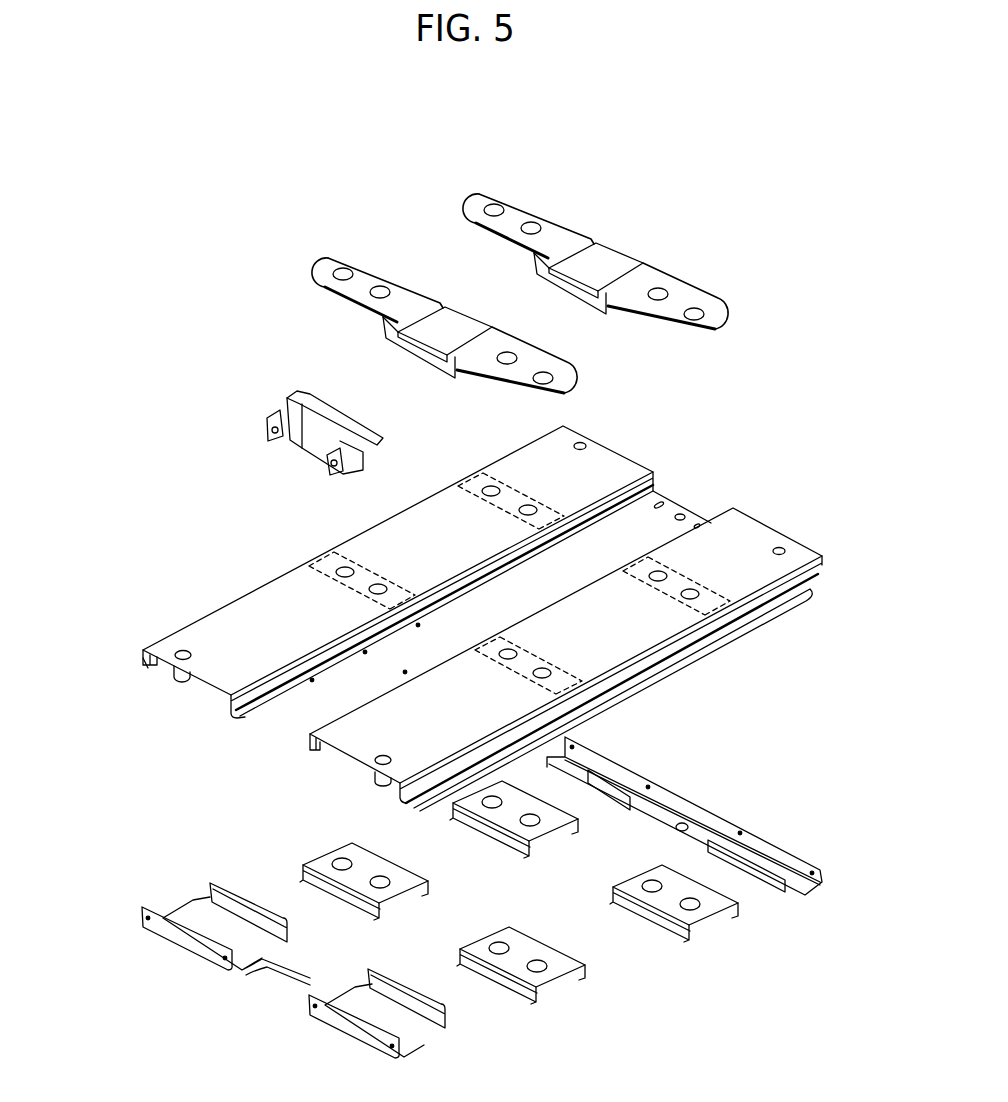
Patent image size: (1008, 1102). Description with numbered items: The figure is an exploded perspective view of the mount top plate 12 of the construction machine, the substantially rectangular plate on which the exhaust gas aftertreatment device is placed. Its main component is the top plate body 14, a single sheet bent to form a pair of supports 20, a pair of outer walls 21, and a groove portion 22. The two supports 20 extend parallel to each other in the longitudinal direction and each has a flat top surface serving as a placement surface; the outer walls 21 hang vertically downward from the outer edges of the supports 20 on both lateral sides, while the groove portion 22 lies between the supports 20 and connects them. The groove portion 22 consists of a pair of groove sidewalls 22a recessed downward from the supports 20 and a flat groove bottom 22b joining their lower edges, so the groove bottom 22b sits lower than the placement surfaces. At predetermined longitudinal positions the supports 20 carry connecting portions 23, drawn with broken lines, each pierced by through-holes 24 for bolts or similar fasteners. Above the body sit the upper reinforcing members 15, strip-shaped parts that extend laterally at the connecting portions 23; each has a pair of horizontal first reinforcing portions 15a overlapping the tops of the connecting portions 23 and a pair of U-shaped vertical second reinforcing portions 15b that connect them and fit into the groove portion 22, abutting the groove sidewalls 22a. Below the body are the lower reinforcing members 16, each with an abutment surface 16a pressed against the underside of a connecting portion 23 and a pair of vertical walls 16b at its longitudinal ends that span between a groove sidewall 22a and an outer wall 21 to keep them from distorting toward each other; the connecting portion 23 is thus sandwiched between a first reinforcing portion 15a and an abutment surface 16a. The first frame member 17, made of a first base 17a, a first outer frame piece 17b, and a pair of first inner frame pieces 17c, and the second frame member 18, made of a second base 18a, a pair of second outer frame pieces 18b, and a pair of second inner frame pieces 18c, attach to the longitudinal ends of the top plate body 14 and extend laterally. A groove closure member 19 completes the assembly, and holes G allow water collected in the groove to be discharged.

The mount top plate 12 is at (215, 272).
The top plate body 14 is at (374, 572).
The upper reinforcing member 15 is at (507, 249).
The first reinforcing portion 15a is at (372, 278).
The second reinforcing portion 15b is at (460, 313).
The lower reinforcing member 16 is at (521, 935).
The abutment surface 16a is at (473, 796).
The vertical wall 16b is at (490, 833).
The first frame member 17 is at (704, 824).
The first base 17a is at (663, 812).
The first outer frame piece 17b is at (780, 833).
The first inner frame piece 17c is at (596, 782).
The second frame member 18 is at (266, 954).
The second base 18a is at (207, 925).
The second outer frame piece 18b is at (197, 942).
The second inner frame piece 18c is at (225, 897).
The groove closure member 19 is at (310, 436).
The support 20 is at (250, 606).
The outer wall 21 is at (165, 633).
The groove portion 22 is at (480, 629).
The groove sidewall 22a is at (482, 565).
The groove bottom 22b is at (600, 540).
The connecting portion 23 is at (520, 488).
The through-hole 24 is at (492, 486).
The hole G is at (697, 524).